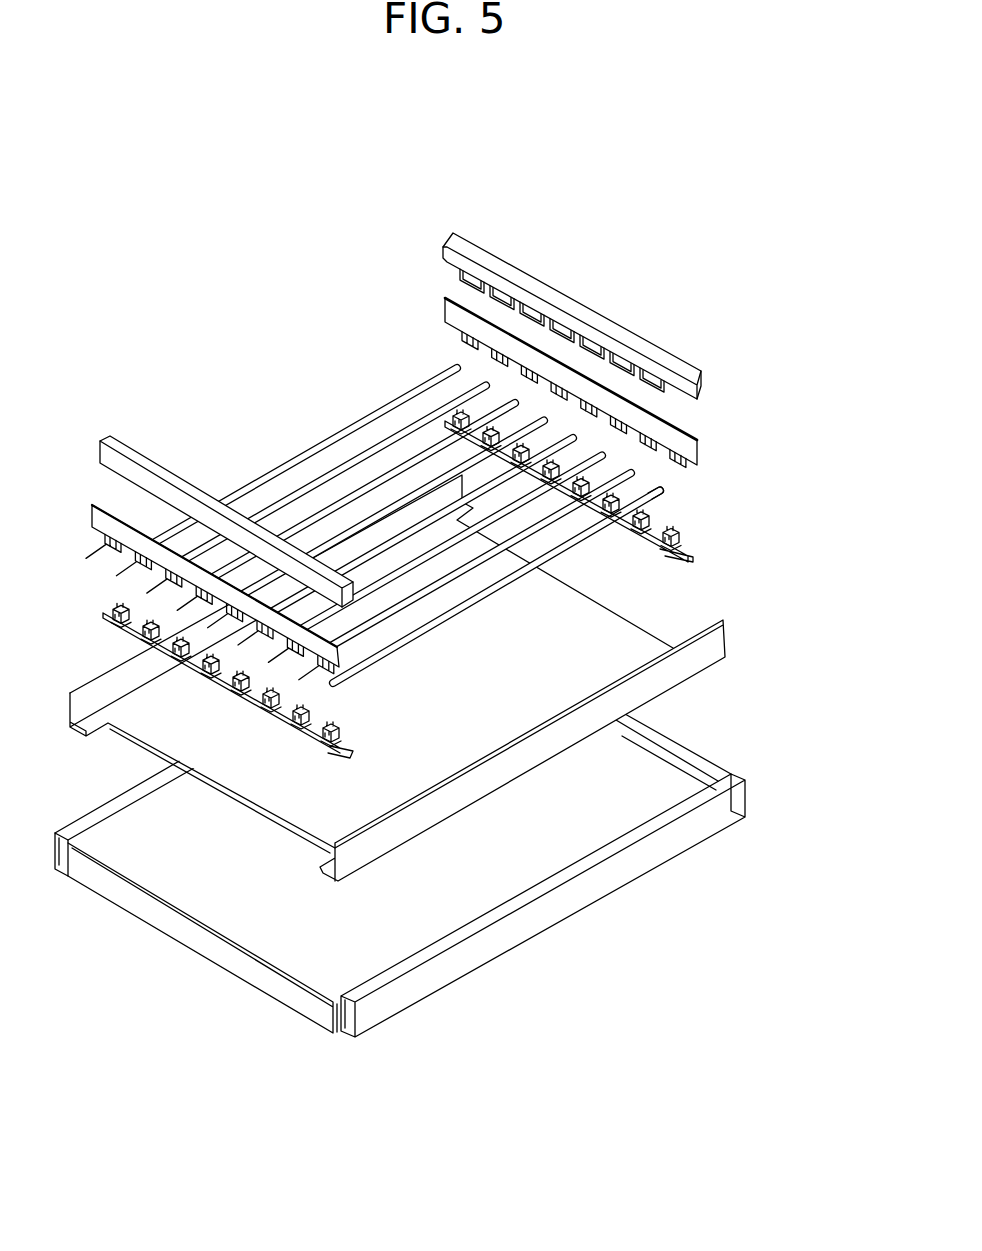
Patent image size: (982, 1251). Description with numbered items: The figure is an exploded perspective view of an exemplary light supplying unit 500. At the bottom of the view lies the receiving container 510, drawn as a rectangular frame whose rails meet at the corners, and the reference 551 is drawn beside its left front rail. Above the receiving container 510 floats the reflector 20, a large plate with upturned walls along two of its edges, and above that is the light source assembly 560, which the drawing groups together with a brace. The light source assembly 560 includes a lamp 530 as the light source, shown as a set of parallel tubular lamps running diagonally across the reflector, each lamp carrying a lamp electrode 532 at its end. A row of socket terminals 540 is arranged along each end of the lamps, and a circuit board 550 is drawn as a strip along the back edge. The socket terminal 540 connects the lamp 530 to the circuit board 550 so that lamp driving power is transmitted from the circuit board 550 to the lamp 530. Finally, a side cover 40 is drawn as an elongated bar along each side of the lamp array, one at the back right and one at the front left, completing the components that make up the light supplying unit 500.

The light supplying unit 500 is at (400, 175).
The receiving container 510 is at (400, 887).
The side wall of bottom chassis 551 is at (222, 916).
The reflector 20 is at (76, 729).
The side cover 40 is at (103, 438).
The light source assembly 560 is at (493, 492).
The circuit board 550 is at (617, 386).
The lamp 530 is at (652, 499).
The lamp electrode 532 is at (666, 489).
The socket terminal 540 is at (694, 547).